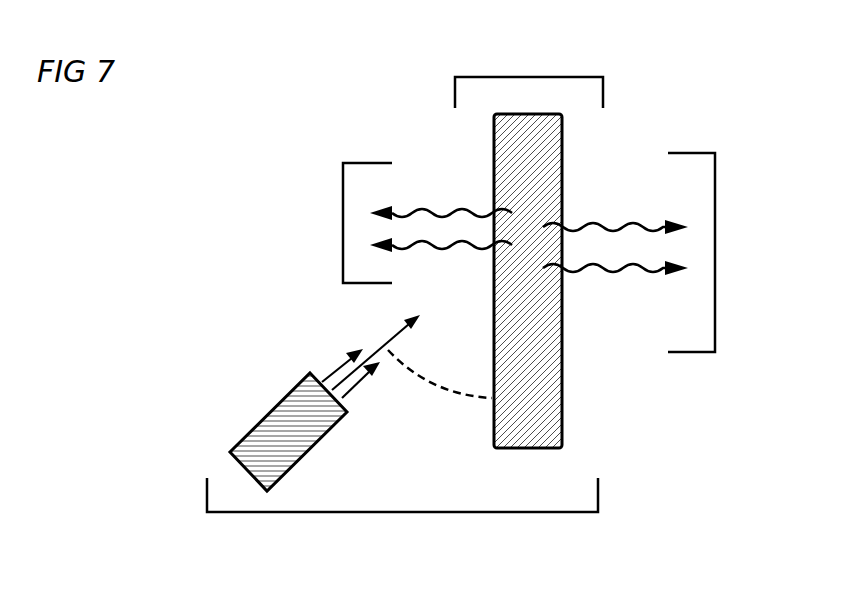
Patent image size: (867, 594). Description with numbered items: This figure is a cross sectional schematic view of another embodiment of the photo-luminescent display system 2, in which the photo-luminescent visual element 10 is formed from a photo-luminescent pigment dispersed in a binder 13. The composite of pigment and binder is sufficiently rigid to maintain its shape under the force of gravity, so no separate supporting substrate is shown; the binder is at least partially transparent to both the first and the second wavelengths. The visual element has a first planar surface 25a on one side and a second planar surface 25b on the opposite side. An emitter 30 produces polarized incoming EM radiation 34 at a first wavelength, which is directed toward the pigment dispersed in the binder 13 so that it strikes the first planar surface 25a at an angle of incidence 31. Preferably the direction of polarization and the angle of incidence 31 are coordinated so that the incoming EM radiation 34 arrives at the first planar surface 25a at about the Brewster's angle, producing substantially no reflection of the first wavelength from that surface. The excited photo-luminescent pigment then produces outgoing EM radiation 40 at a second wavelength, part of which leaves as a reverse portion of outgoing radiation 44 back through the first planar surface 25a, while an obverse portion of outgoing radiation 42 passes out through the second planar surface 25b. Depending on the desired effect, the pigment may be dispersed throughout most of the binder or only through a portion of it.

The photo-luminescent display system 2 is at (403, 512).
The photo-luminescent visual element 10 is at (530, 77).
The photo-luminescent pigment dispersed in a binder 13 is at (562, 280).
The first planar surface 25a is at (494, 145).
The second planar surface 25b is at (562, 145).
The emitter 30 is at (242, 440).
The angle of incidence 31 is at (430, 385).
The polarized incoming EM radiation at a first wavelength 34 is at (388, 340).
The outgoing EM radiation at a second wavelength 40 is at (457, 213).
The obverse portion of outgoing radiation 42 is at (715, 210).
The reverse portion of outgoing radiation 44 is at (343, 200).